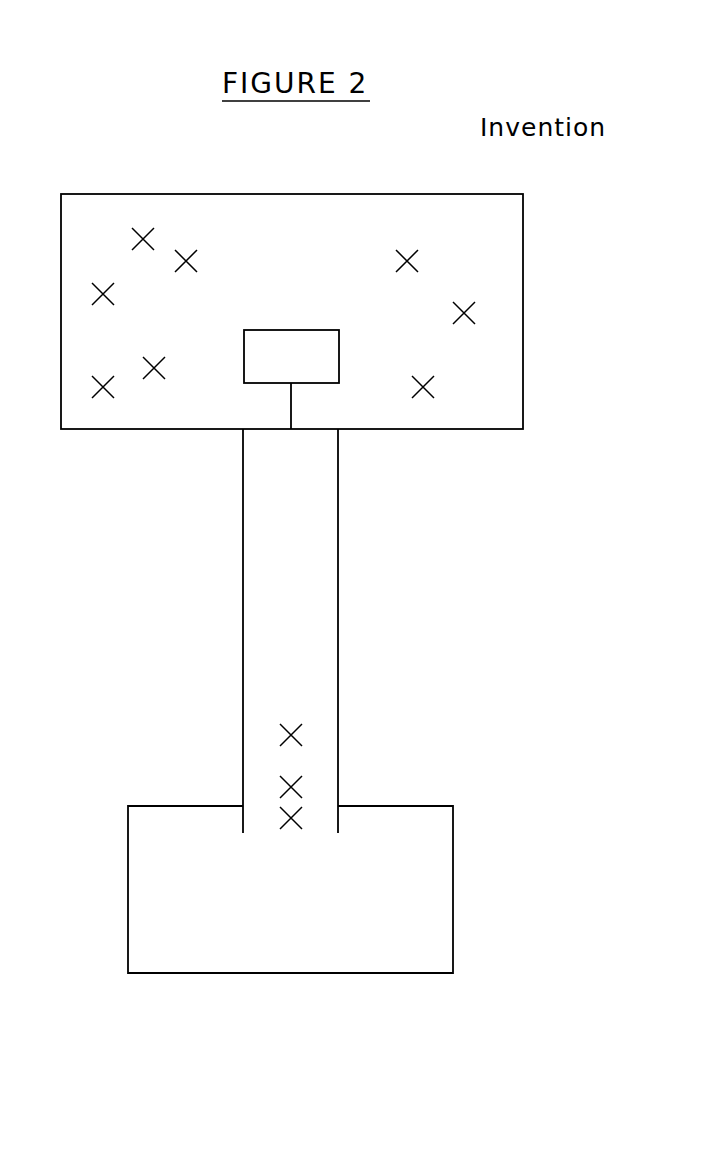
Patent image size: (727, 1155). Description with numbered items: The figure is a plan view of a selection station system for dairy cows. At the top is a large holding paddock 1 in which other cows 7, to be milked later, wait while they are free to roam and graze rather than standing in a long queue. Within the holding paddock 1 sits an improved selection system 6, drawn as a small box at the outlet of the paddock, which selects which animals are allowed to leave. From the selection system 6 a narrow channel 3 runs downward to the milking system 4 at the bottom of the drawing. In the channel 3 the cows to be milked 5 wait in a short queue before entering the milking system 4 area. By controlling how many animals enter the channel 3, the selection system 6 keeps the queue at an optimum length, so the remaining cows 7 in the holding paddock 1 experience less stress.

The holding paddock 1 is at (292, 311).
The channel 3 is at (243, 544).
The milking system 4 is at (290, 889).
The cows to be milked 5 is at (307, 732).
The selection system 6 is at (291, 379).
The other cows 7 is at (425, 264).